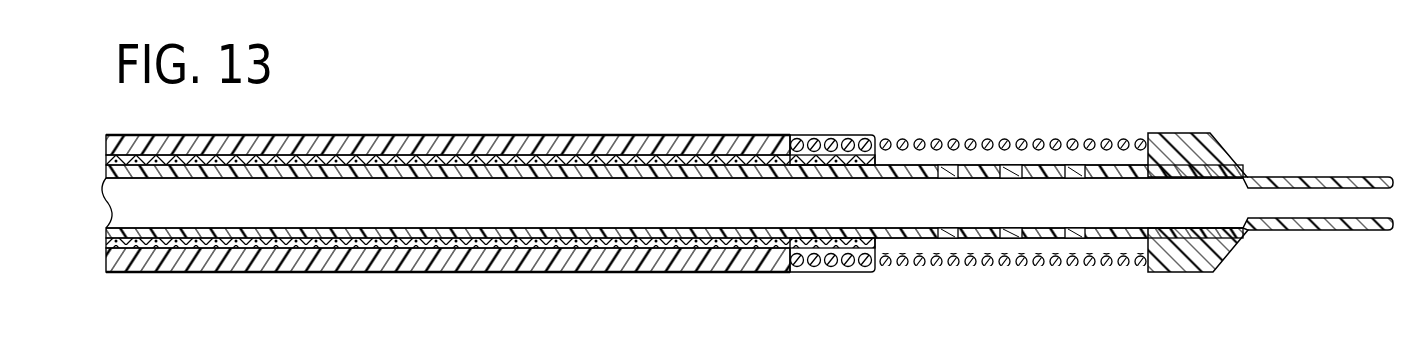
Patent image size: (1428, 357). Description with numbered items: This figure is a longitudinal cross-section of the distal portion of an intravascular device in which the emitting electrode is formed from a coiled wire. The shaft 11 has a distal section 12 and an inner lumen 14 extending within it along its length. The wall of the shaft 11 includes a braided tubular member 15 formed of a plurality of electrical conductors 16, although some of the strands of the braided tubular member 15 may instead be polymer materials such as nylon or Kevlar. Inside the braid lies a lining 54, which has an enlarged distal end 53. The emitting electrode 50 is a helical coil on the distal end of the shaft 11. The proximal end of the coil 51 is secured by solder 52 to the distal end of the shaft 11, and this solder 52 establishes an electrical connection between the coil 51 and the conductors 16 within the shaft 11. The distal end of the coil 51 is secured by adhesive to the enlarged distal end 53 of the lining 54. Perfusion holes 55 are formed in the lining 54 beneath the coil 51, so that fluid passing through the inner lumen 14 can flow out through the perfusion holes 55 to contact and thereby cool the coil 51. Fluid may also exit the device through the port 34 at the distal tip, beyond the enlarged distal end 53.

The shaft 11 is at (414, 272).
The distal section 12 is at (623, 135).
The inner lumen 14 is at (381, 187).
The braided tubular member 15 is at (503, 160).
The electrical conductors 16 is at (167, 248).
The port 34 is at (1392, 203).
The emitting electrode 50 is at (989, 113).
The coil 51 is at (921, 139).
The solder 52 is at (843, 272).
The enlarged distal end 53 is at (1208, 157).
The lining 54 is at (568, 238).
The perfusion holes 55 is at (1015, 170).